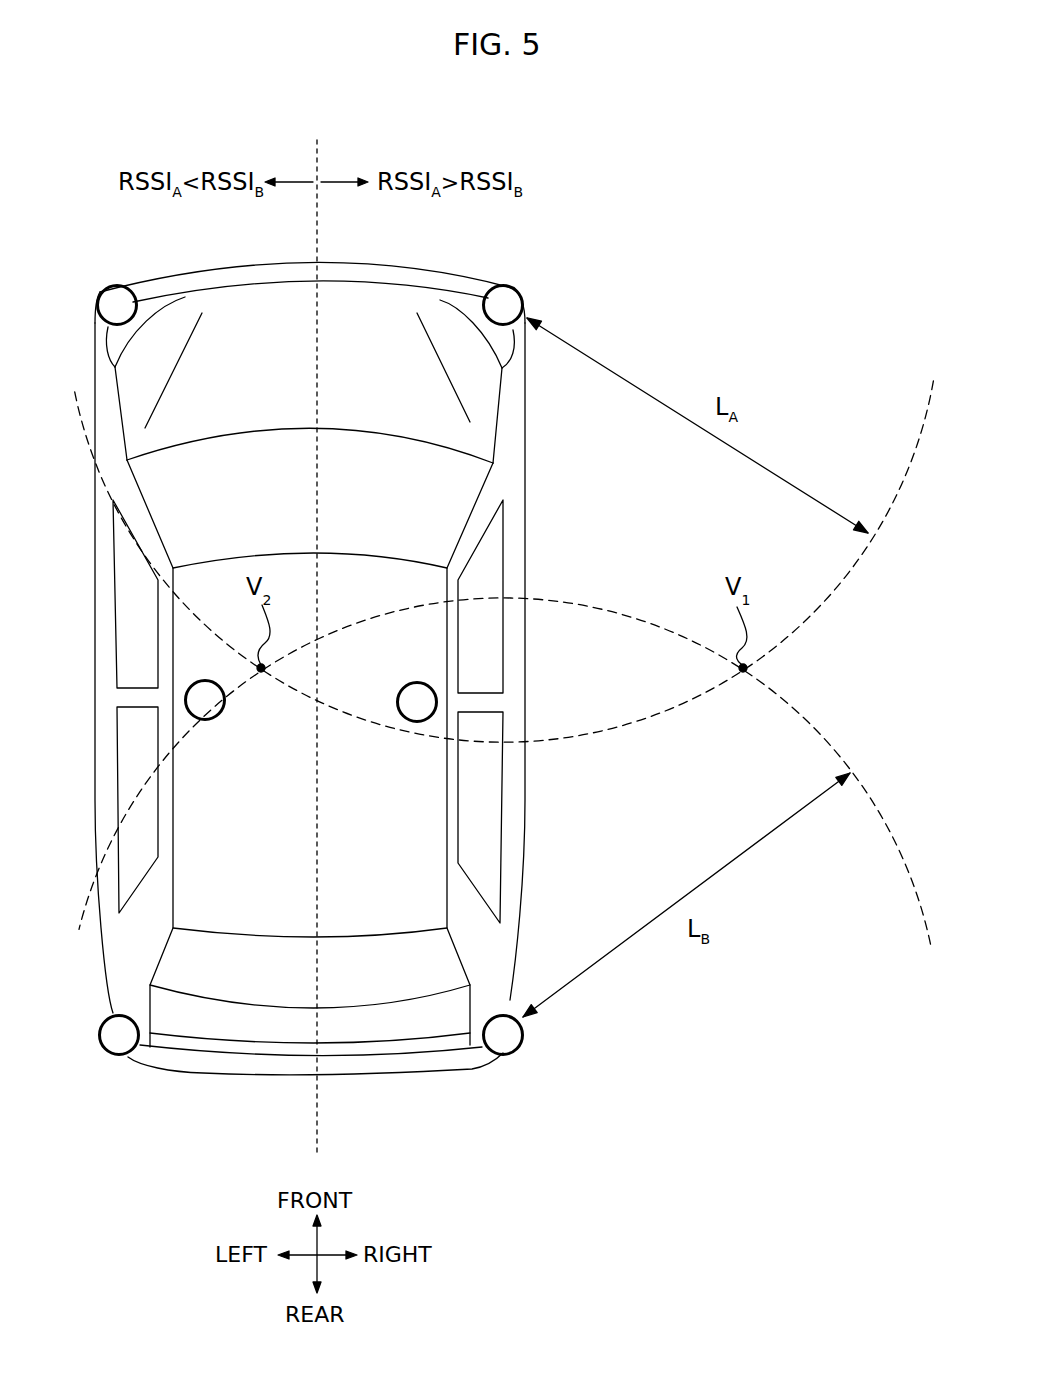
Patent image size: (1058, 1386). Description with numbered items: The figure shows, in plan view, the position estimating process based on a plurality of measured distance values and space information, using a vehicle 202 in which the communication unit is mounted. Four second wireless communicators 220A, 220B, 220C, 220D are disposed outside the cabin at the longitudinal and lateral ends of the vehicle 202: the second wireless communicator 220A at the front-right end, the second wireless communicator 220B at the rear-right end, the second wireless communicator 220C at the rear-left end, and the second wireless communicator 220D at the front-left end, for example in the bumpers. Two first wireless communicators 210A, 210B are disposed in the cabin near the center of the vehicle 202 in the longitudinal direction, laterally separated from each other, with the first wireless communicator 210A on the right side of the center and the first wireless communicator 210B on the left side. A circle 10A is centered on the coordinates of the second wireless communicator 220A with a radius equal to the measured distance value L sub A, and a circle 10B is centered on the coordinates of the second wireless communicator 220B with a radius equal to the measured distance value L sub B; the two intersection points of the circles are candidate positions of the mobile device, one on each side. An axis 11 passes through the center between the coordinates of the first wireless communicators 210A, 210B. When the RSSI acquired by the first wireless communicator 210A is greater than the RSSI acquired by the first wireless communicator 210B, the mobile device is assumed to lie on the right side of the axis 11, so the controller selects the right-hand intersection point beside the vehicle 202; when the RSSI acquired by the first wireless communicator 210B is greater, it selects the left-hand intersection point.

The axis 11 is at (317, 157).
The vehicle 202 is at (203, 1073).
The second wireless communicator 220A is at (522, 290).
The second wireless communicator 220B is at (510, 1053).
The second wireless communicator 220C is at (100, 1030).
The second wireless communicator 220D is at (106, 290).
The first wireless communicator 210A is at (423, 722).
The first wireless communicator 210B is at (187, 695).
The circle 10A is at (928, 403).
The circle 10B is at (918, 918).